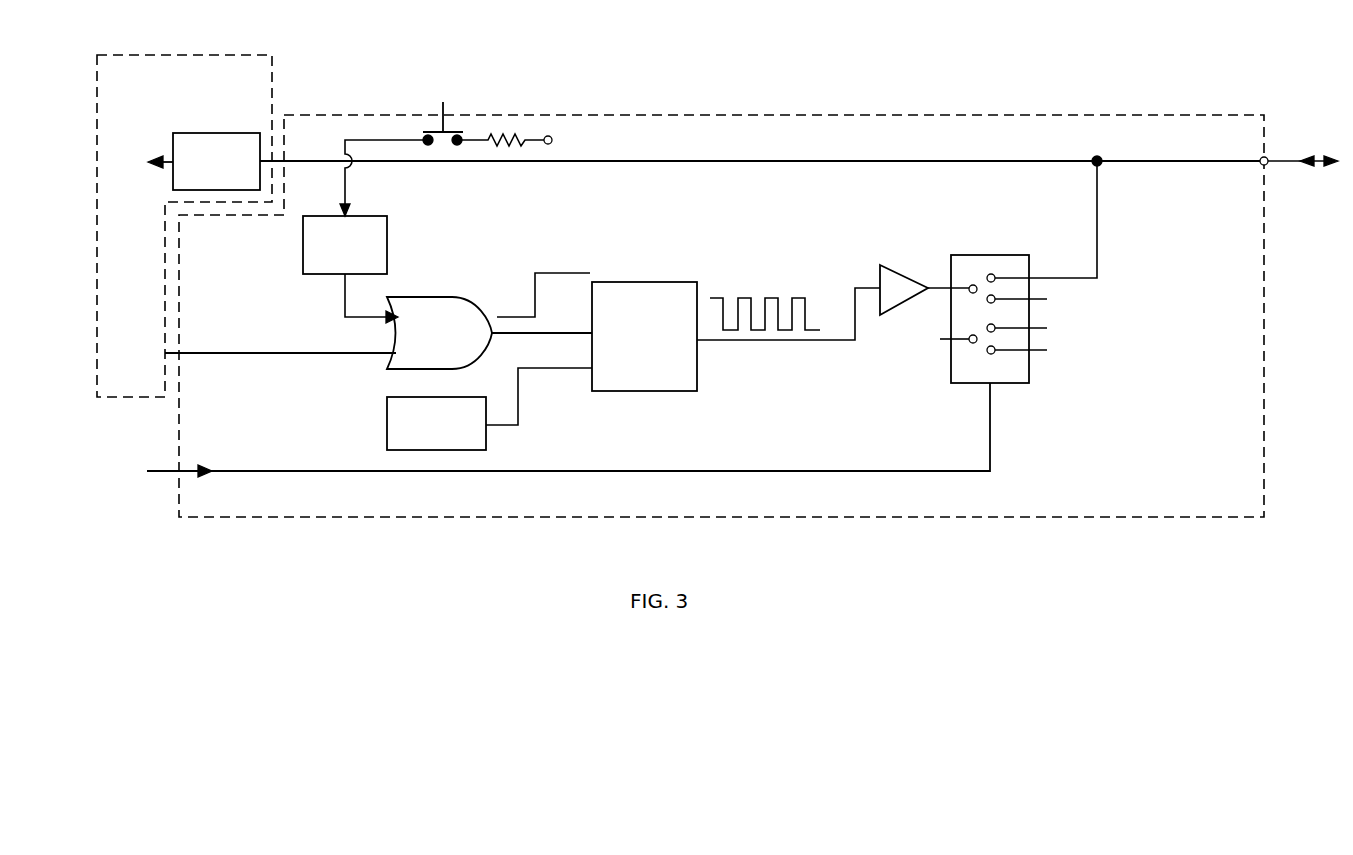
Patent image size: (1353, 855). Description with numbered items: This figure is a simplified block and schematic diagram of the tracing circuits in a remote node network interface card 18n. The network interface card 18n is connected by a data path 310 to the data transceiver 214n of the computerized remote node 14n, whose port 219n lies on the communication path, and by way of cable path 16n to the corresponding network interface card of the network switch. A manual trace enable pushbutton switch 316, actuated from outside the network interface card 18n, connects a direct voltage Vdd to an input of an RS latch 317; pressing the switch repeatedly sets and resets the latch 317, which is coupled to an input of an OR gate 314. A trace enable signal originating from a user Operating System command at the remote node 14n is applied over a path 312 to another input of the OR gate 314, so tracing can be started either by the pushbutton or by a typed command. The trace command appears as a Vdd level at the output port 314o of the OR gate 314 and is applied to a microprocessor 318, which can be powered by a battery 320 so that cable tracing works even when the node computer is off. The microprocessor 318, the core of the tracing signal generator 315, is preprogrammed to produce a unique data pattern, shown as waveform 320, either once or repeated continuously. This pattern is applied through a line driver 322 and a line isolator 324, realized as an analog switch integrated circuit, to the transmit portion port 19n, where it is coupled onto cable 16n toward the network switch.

The computerized remote node 14n is at (197, 55).
The data transceiver (Tx/Rx) 214n is at (229, 133).
The port 219n is at (358, 178).
The manual trace enable pushbutton switch 316 is at (511, 105).
The RS latch 317 is at (372, 216).
The OR gate 314 is at (420, 297).
The output port of OR gate 314o is at (494, 338).
The path 312 is at (220, 353).
The microprocessor 318 is at (618, 391).
The tracing signal generator 315 is at (649, 219).
The battery / unique data pattern waveform 320 is at (387, 423).
The line driver 322 is at (921, 334).
The line isolator 324 is at (985, 255).
The data path 310 is at (823, 163).
The cable path 16n is at (1288, 160).
The transmit portion port 19n is at (1271, 165).
The network interface card 18n is at (817, 517).